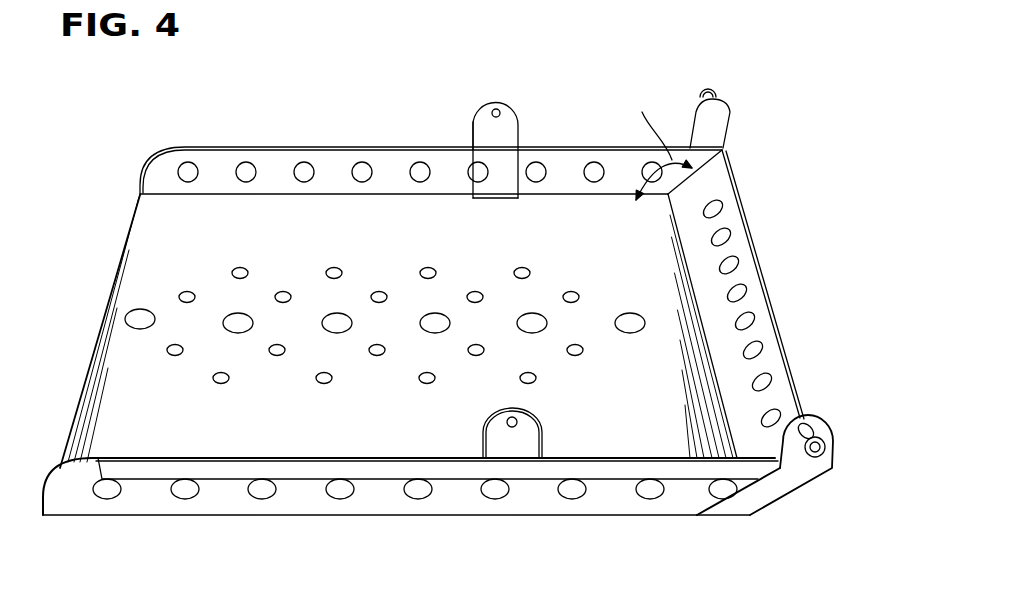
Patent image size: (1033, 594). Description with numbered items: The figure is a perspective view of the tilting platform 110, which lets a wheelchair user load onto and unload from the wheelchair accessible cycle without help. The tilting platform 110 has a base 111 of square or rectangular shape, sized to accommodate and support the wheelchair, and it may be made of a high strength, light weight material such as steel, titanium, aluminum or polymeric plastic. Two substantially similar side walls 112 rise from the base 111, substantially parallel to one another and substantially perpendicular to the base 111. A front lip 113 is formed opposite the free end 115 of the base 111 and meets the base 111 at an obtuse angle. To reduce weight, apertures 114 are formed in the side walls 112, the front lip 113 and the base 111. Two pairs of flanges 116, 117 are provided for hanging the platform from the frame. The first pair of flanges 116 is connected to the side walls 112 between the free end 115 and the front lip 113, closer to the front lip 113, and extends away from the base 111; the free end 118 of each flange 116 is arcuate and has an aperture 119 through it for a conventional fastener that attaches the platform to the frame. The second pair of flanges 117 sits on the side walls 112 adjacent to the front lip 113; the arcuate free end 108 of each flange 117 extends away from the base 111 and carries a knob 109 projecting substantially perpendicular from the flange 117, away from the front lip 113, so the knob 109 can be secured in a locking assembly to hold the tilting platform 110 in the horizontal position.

The free end 108 is at (718, 102).
The knob 109 is at (703, 92).
The tilting platform 110 is at (803, 105).
The base 111 is at (168, 230).
The side walls 112 is at (278, 170).
The front lip 113 is at (780, 325).
The apertures 114 is at (138, 312).
The free end 115 is at (80, 382).
The flanges 116 is at (513, 137).
The flanges 117 is at (723, 128).
The free end 118 is at (471, 122).
The aperture 119 is at (496, 107).